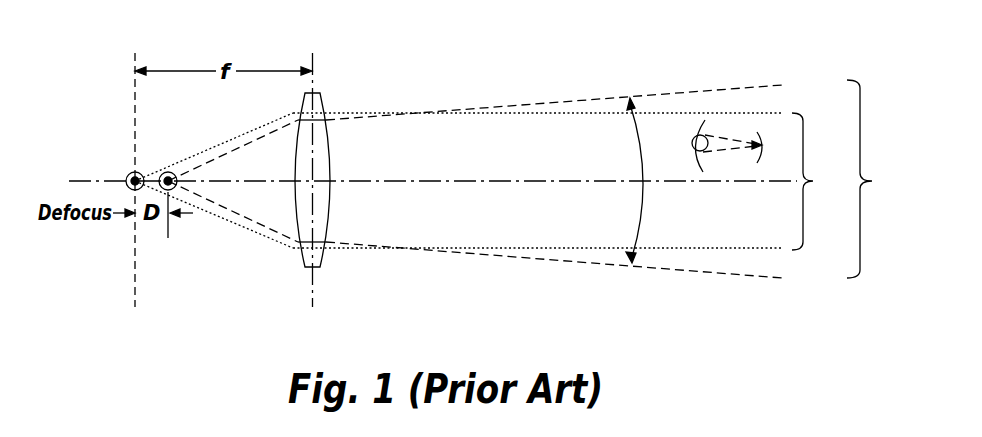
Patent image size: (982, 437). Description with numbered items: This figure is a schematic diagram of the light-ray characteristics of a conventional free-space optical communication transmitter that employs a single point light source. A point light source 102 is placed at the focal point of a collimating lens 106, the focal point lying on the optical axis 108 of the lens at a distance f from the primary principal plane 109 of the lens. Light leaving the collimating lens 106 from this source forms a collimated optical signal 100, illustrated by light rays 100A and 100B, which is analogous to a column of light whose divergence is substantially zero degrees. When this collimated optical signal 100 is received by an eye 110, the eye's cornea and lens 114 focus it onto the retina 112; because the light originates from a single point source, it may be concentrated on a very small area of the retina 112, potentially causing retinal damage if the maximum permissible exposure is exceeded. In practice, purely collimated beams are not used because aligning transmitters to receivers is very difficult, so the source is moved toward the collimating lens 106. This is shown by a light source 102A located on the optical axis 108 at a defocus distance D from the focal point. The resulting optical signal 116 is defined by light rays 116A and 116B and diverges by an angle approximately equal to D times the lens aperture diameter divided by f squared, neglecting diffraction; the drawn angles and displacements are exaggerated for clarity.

The collimated optical signal 100 is at (828, 181).
The light ray 100A is at (519, 114).
The light ray 100B is at (524, 247).
The point light source 102 is at (137, 170).
The light source 102A is at (170, 172).
The collimating lens 106 is at (324, 104).
The optical axis 108 is at (490, 183).
The primary principal plane 109 is at (313, 288).
The eye 110 is at (724, 118).
The retina 112 is at (760, 133).
The cornea and lens 114 is at (694, 140).
The optical signal 116 is at (775, 179).
The light ray 116A is at (604, 97).
The light ray 116B is at (604, 265).